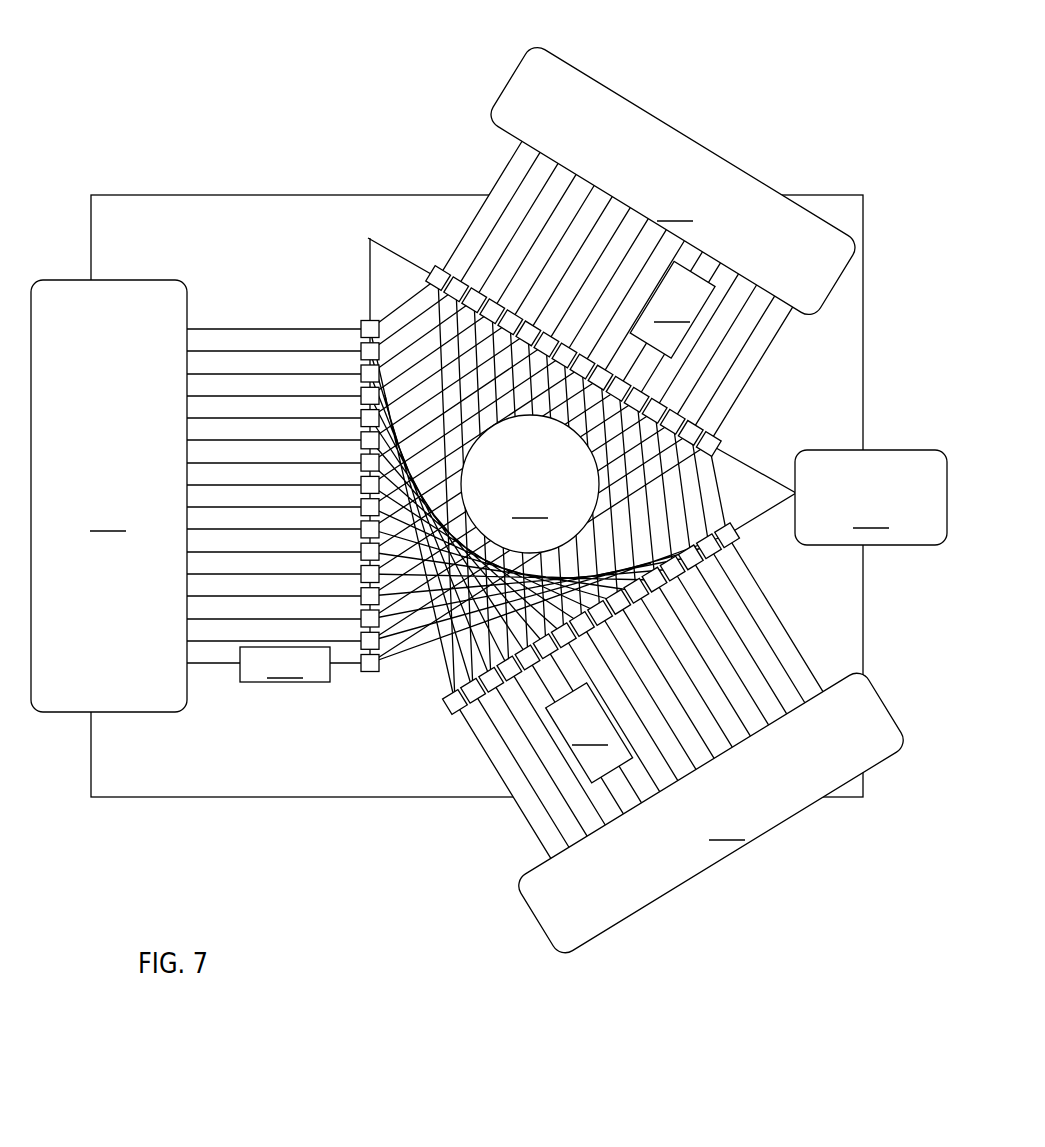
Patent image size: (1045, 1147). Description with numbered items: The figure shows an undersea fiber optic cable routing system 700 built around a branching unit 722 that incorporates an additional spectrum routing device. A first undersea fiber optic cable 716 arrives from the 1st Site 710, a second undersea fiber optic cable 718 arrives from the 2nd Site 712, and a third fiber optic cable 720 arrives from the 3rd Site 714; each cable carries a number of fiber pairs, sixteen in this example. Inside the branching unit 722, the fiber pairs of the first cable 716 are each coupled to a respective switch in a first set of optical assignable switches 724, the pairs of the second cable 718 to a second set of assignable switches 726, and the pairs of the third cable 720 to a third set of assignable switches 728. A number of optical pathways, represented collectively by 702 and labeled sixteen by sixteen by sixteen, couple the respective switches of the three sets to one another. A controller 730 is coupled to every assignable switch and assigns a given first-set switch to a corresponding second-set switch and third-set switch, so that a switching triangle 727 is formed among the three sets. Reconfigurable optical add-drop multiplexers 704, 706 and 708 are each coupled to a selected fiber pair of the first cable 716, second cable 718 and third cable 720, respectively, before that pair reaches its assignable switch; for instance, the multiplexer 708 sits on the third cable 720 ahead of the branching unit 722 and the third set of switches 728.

The undersea fiber optic cable routing system 700 is at (310, 75).
The optical pathways 702 is at (530, 484).
The reconfigurable optical add-drop multiplexer 704 is at (285, 664).
The reconfigurable optical add-drop multiplexer 706 is at (589, 733).
The reconfigurable optical add-drop multiplexer 708 is at (672, 309).
The 1st Site 710 is at (109, 496).
The 2nd Site 712 is at (711, 813).
The 3rd Site 714 is at (673, 180).
The first undersea fiber optic cable 716 is at (300, 325).
The second undersea fiber optic cable 718 is at (519, 843).
The third fiber optic cable 720 is at (479, 190).
The branching unit 722 is at (364, 228).
The first set of optical assignable switches 724 is at (362, 672).
The second set of assignable switches 726 is at (444, 717).
The switching triangle 727 is at (714, 482).
The third set of assignable switches 728 is at (433, 265).
The controller 730 is at (871, 497).